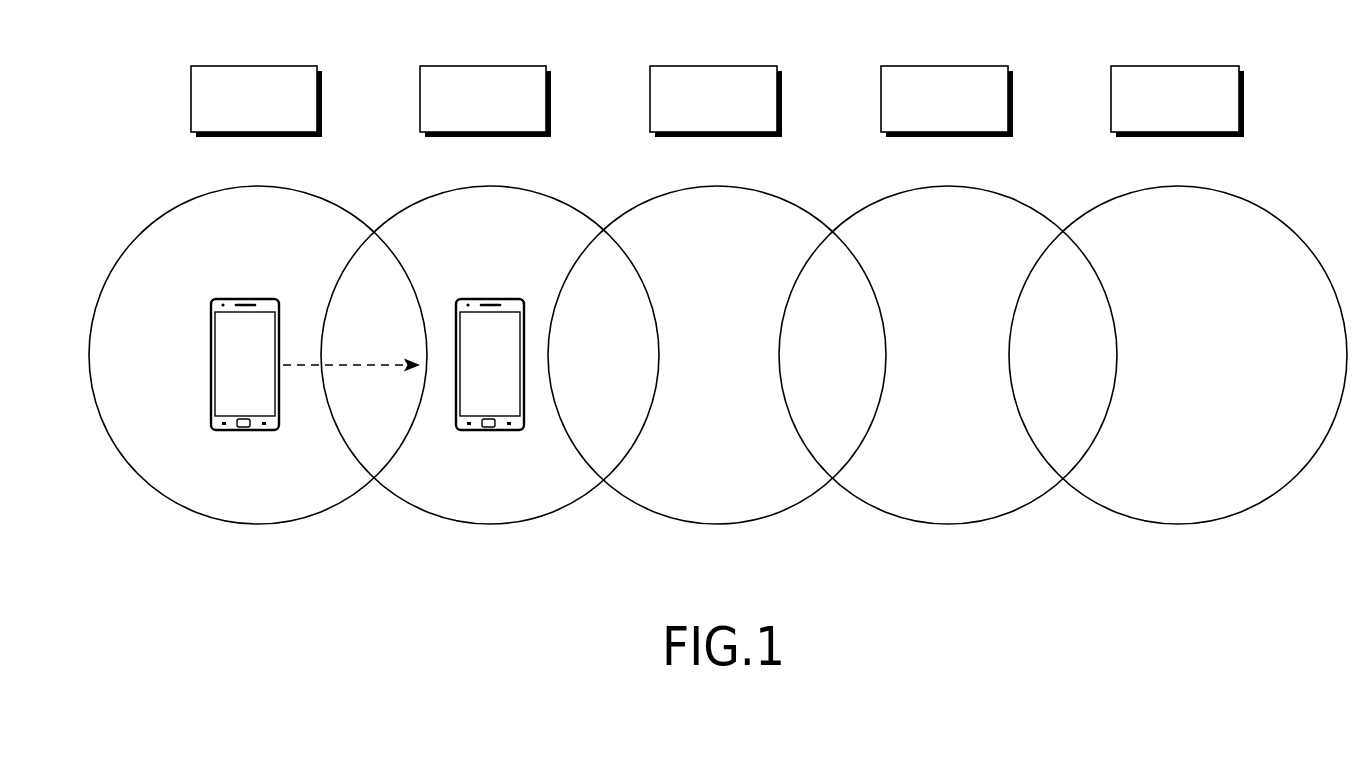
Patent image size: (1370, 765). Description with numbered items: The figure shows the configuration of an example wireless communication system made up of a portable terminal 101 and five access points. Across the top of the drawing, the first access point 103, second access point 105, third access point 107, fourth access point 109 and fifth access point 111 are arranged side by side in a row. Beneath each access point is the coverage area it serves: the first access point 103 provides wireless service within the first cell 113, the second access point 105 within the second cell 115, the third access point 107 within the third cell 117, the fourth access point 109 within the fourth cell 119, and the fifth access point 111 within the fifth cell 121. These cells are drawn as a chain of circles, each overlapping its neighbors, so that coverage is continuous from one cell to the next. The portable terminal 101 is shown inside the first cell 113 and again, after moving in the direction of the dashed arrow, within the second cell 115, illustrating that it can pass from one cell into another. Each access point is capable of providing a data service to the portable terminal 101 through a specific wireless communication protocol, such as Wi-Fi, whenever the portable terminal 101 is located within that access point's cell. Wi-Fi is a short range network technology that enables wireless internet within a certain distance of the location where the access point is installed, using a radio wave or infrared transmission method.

The portable terminal 101 is at (244, 299).
The first access point 103 is at (254, 66).
The second access point 105 is at (486, 66).
The third access point 107 is at (717, 66).
The fourth access point 109 is at (947, 66).
The fifth access point 111 is at (1177, 66).
The first cell 113 is at (258, 186).
The second cell 115 is at (490, 186).
The third cell 117 is at (718, 186).
The fourth cell 119 is at (949, 186).
The fifth cell 121 is at (1179, 186).